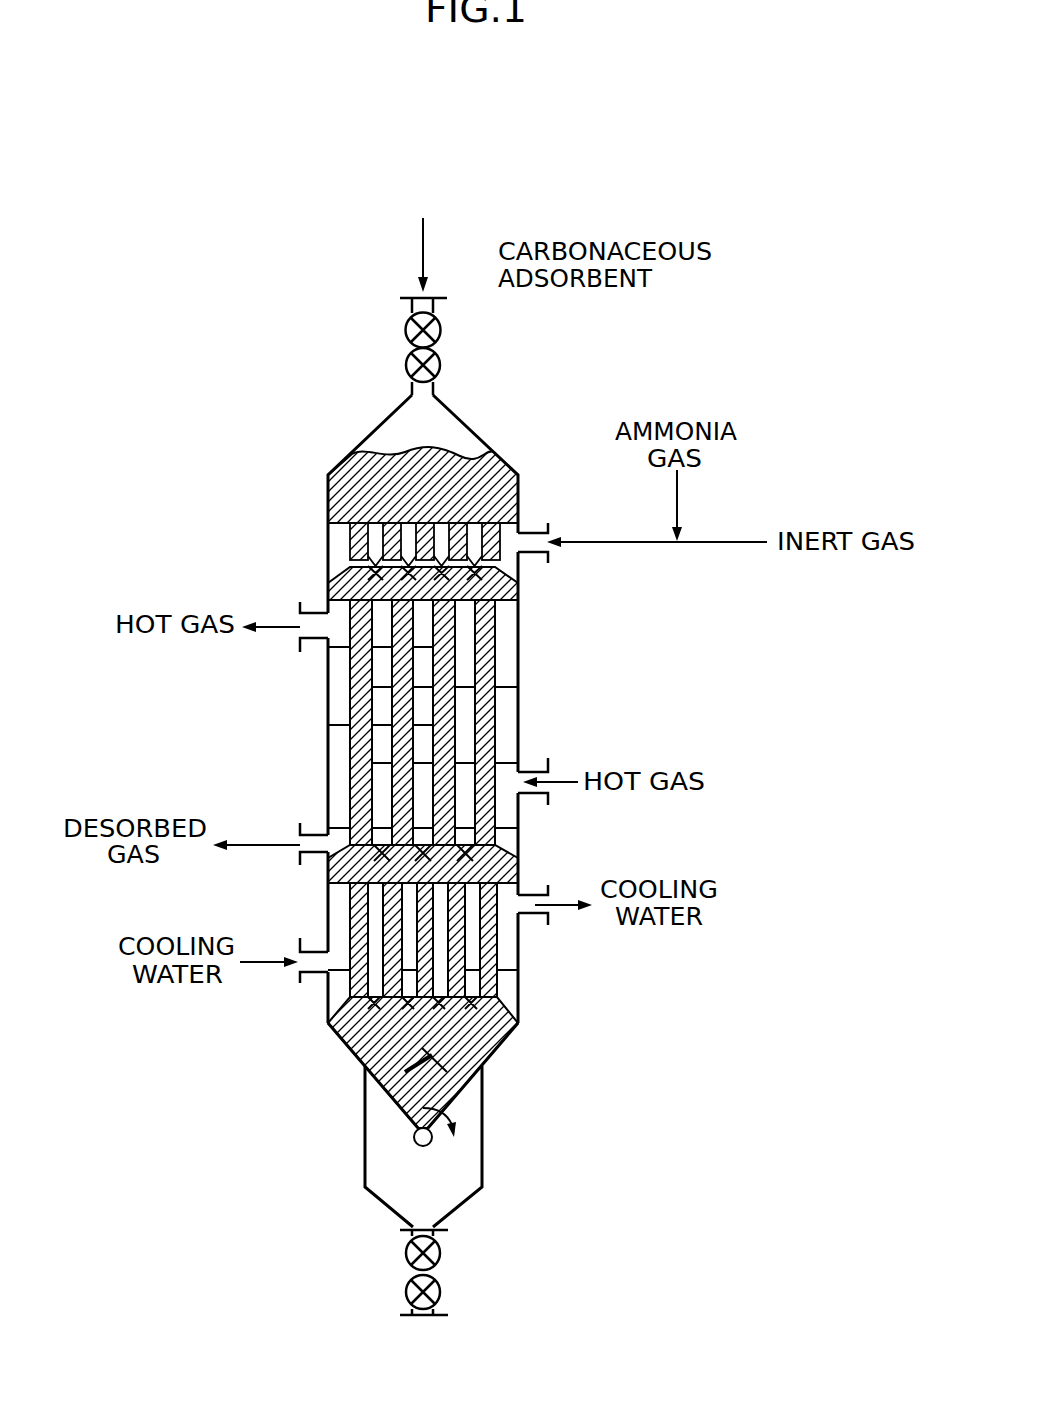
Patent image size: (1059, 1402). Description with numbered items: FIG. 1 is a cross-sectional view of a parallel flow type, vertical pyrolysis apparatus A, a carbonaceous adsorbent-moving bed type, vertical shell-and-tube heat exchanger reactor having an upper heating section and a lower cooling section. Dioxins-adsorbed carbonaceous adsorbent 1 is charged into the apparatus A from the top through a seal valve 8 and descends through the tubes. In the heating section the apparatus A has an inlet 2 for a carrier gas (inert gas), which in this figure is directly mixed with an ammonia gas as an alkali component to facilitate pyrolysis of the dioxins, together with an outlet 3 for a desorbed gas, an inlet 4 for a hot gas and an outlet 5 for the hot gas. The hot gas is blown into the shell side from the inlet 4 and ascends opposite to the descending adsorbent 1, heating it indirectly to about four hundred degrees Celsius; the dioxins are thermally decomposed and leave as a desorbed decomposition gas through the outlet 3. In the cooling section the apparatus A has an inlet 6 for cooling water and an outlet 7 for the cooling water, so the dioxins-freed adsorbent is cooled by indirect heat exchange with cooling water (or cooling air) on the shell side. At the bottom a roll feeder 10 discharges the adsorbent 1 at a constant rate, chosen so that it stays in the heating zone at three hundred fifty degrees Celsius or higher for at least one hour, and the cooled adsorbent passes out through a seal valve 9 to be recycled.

The carbonaceous adsorbent 1 is at (425, 250).
The inlet for carrier gas 2 is at (537, 530).
The outlet for desorbed gas 3 is at (312, 834).
The inlet for hot gas 4 is at (530, 797).
The outlet for hot gas 5 is at (318, 612).
The inlet for cooling water 6 is at (315, 978).
The outlet for cooling water 7 is at (530, 918).
The seal valve 8 is at (441, 366).
The seal valve 9 is at (441, 1253).
The roll feeder 10 is at (413, 1140).
The parallel flow type, vertical pyrolysis apparatus A is at (548, 668).